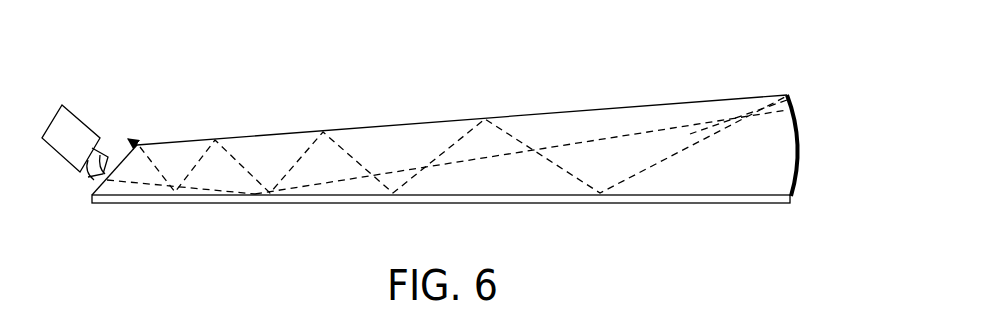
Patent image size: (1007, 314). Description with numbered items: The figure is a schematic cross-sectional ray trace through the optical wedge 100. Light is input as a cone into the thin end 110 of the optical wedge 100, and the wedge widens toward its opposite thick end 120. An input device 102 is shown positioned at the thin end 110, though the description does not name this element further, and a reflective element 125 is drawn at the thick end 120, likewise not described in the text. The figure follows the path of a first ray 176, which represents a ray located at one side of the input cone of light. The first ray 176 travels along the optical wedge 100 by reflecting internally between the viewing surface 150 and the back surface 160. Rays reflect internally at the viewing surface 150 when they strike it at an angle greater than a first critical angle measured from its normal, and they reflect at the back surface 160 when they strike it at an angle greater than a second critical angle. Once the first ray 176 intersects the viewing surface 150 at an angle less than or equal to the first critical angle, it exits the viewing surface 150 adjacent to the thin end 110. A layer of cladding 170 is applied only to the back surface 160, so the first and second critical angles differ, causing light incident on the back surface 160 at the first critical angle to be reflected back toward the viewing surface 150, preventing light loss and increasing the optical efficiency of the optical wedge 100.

The optical wedge 100 is at (256, 90).
The image source / projector 102 is at (72, 113).
The thin end 110 is at (107, 180).
The thick end 120 is at (804, 127).
The mirror coating 125 is at (797, 177).
The viewing surface 150 is at (448, 120).
The back surface 160 is at (683, 193).
The cladding 170 is at (632, 203).
The first ray 176 is at (307, 183).